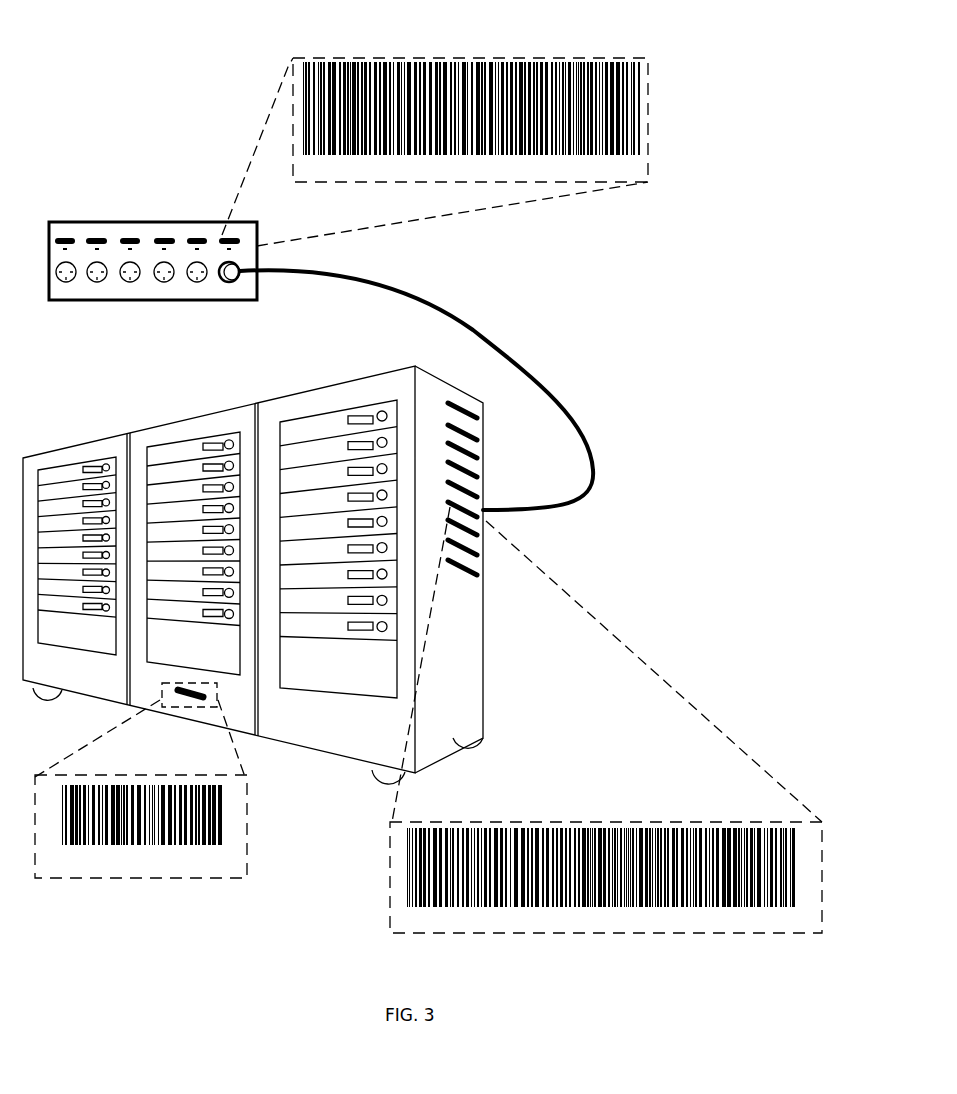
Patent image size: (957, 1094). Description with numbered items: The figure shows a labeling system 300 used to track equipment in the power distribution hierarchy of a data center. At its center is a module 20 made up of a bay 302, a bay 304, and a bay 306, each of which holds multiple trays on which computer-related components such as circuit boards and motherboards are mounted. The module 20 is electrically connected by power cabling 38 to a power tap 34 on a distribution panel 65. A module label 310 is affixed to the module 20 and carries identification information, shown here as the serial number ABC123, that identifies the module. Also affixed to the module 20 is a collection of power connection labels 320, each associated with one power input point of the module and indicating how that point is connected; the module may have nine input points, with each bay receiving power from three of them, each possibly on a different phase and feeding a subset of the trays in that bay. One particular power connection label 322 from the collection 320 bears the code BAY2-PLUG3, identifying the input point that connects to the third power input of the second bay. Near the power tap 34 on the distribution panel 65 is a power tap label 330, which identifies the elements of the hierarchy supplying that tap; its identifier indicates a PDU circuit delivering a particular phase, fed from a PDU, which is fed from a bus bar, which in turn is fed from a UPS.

The labeling system 300 is at (109, 56).
The distribution panel 65 is at (100, 222).
The power tap 34 is at (251, 280).
The power cabling 38 is at (486, 337).
The power tap label 330 is at (648, 117).
The module 20 is at (262, 366).
The bay 302 is at (82, 443).
The bay 304 is at (152, 430).
The bay 306 is at (268, 398).
The power connection labels 320 is at (490, 410).
The power connection label 322 is at (390, 858).
The module label 310 is at (247, 840).